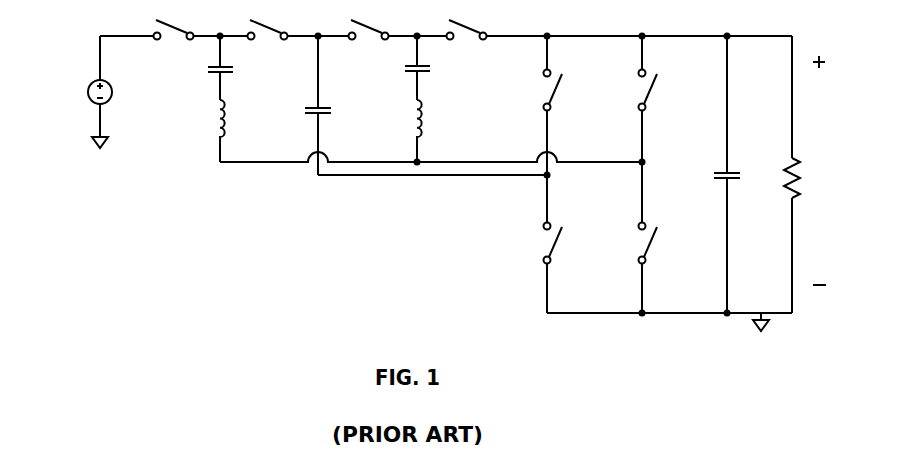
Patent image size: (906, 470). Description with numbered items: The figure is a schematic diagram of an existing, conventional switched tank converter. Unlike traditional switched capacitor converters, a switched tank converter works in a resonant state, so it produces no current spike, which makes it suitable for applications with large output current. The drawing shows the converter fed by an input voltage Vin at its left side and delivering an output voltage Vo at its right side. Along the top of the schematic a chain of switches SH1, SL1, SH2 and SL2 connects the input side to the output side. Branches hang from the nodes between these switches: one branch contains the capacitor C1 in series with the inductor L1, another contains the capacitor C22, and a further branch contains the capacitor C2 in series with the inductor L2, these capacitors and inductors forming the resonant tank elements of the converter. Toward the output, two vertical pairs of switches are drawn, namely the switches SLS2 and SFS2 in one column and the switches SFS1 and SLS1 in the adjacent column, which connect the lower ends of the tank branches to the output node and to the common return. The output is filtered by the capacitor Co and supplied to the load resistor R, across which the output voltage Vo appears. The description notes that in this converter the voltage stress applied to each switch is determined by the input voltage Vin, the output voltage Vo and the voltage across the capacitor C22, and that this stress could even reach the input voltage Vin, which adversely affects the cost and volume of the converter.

The input voltage Vin is at (82, 92).
The high-side switch 1 SH1 is at (170, 46).
The low-side switch 1 SL1 is at (269, 46).
The high-side switch 2 SH2 is at (369, 46).
The low-side switch 2 SL2 is at (472, 46).
The resonant capacitor 1 C1 is at (238, 70).
The resonant inductor 1 L1 is at (241, 131).
The capacitor C22 is at (332, 105).
The resonant capacitor 2 C2 is at (433, 69).
The resonant inductor 2 L2 is at (436, 131).
The switch LS2 SLS2 is at (566, 105).
The switch FS1 SFS1 is at (663, 99).
The switch FS2 SFS2 is at (566, 244).
The switch LS1 SLS1 is at (661, 237).
The output capacitor Co is at (714, 174).
The load resistor R is at (781, 178).
The output voltage Vo is at (828, 170).